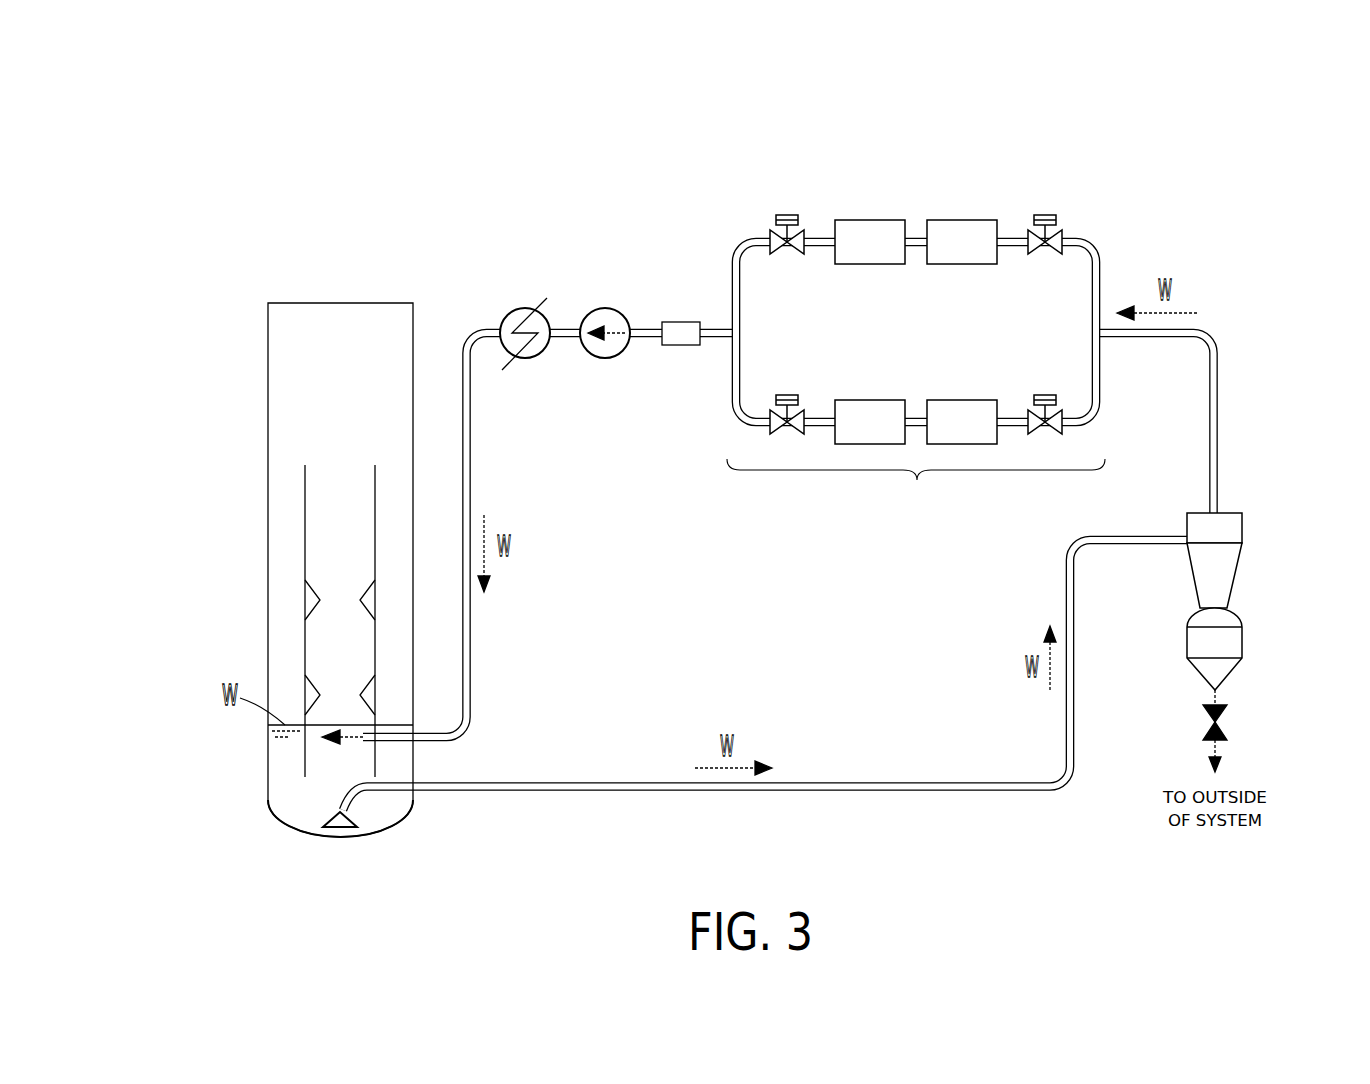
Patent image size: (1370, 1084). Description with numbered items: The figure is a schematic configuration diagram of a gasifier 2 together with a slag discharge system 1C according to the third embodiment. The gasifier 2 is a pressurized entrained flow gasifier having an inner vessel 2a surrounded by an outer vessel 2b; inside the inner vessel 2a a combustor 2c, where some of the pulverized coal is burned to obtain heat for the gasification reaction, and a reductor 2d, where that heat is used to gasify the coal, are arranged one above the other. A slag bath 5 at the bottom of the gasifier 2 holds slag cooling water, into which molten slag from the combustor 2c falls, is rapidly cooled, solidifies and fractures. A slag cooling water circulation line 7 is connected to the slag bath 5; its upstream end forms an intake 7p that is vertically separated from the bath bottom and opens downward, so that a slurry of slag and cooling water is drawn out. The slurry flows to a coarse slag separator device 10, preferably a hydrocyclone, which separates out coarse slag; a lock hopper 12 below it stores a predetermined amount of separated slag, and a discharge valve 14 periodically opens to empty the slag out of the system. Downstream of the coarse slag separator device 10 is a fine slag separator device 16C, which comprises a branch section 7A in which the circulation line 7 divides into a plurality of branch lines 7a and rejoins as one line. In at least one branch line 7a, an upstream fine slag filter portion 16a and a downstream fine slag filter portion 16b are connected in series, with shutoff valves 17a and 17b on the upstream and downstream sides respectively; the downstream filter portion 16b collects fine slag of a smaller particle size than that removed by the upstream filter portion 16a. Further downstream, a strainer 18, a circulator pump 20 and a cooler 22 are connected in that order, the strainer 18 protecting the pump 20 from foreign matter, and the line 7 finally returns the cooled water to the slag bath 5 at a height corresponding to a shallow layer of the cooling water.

The slag discharge system 1C is at (440, 186).
The gasifier 2 is at (250, 337).
The inner vessel 2a is at (305, 487).
The outer vessel 2b is at (268, 588).
The combustor 2c is at (357, 660).
The reductor 2d is at (357, 533).
The slag bath 5 is at (268, 766).
The slag cooling water circulation line 7 is at (472, 430).
The branch line 7a is at (1086, 240).
The intake 7p is at (353, 818).
The branch section 7A is at (916, 485).
The coarse slag separator device 10 is at (1243, 527).
The lock hopper 12 is at (1243, 644).
The discharge valve 14 is at (1228, 721).
The fine slag filter portion 16a is at (962, 220).
The fine slag filter portion 16b is at (870, 220).
The fine slag separator device 16C is at (1012, 112).
The shutoff valve 17a is at (1045, 215).
The shutoff valve 17b is at (787, 215).
The strainer 18 is at (680, 322).
The circulator pump 20 is at (603, 308).
The cooler 22 is at (523, 308).